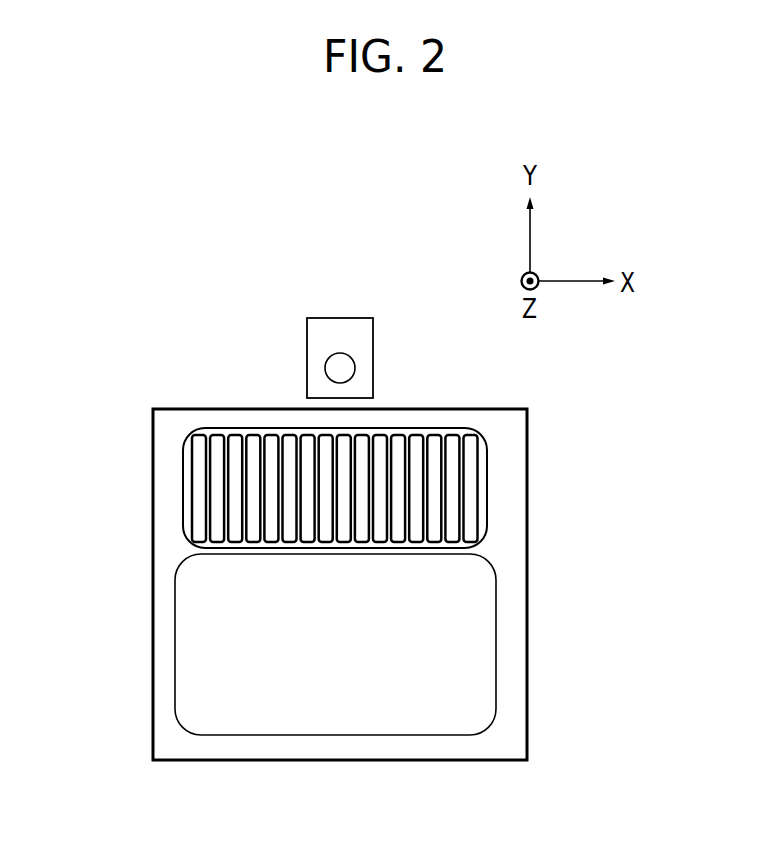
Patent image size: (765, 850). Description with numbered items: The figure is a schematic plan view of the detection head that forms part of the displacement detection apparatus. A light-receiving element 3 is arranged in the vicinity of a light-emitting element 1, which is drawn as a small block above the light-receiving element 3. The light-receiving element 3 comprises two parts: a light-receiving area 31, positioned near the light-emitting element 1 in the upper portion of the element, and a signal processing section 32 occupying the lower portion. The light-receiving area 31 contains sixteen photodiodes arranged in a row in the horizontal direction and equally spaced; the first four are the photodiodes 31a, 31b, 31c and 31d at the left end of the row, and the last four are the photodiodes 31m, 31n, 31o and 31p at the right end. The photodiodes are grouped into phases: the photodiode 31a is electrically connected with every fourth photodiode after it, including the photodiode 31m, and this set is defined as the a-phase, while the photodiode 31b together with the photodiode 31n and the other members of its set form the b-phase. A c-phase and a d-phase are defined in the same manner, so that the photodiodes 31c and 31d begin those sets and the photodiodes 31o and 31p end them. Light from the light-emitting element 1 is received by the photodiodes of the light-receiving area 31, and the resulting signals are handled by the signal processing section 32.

The light-emitting element 1 is at (363, 340).
The light-receiving element 3 is at (152, 732).
The light-receiving area 31 is at (223, 430).
The photodiode 31a is at (203, 455).
The photodiode 31b is at (217, 485).
The photodiode 31c is at (233, 495).
The photodiode 31d is at (257, 522).
The photodiode 31m is at (415, 528).
The photodiode 31n is at (436, 500).
The photodiode 31o is at (453, 492).
The photodiode 31p is at (470, 448).
The signal processing section 32 is at (483, 708).